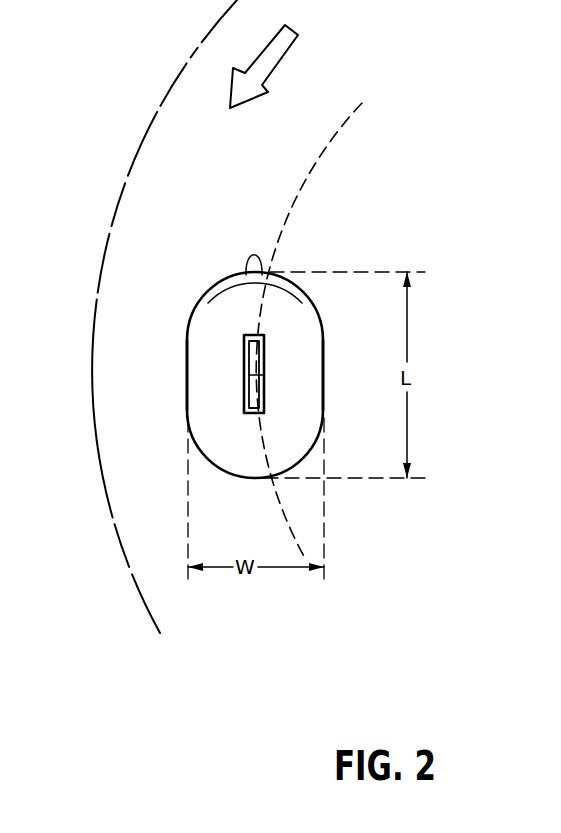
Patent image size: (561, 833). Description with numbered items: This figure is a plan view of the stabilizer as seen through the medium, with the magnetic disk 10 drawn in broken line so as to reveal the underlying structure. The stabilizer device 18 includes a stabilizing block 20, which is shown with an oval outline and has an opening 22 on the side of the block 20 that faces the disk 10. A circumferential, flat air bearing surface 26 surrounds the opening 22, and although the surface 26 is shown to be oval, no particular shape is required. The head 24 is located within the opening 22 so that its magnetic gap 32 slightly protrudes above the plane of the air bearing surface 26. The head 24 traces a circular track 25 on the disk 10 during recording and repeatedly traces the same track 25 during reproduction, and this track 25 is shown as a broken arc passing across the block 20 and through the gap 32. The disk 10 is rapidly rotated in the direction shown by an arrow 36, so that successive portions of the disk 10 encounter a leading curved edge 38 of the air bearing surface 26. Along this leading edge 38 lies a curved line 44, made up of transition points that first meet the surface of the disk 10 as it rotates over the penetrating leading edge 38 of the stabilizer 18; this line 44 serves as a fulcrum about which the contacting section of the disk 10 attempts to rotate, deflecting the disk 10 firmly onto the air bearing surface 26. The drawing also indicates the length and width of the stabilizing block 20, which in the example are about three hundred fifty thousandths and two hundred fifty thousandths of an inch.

The magnetic disk 10 is at (108, 232).
The stabilizer device 18 is at (222, 478).
The stabilizing block 20 is at (186, 404).
The opening 22 is at (250, 393).
The head 24 is at (244, 357).
The circular track 25 is at (331, 128).
The air bearing surface 26 is at (321, 320).
The magnetic gap 32 is at (264, 375).
The arrow 36 is at (275, 56).
The leading curved edge 38 is at (250, 262).
The curved line 44 is at (239, 273).